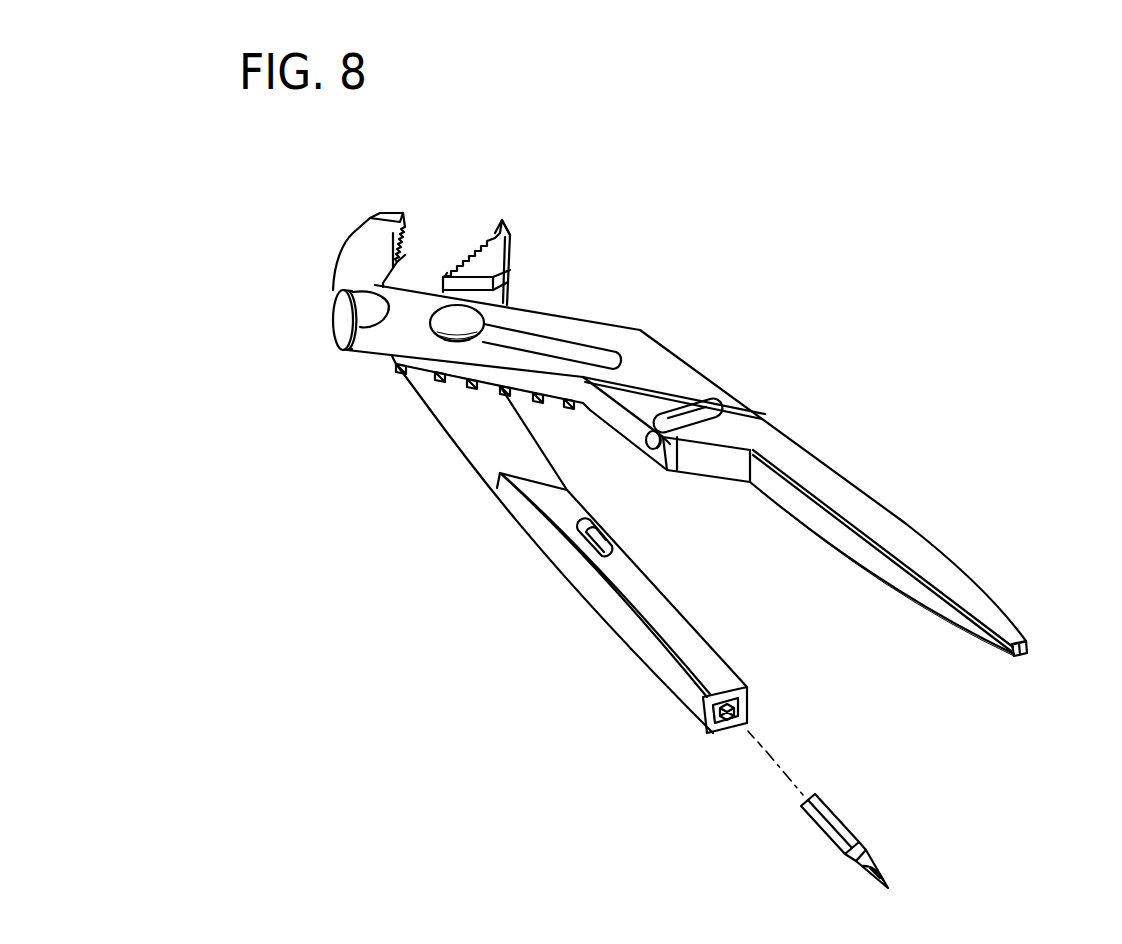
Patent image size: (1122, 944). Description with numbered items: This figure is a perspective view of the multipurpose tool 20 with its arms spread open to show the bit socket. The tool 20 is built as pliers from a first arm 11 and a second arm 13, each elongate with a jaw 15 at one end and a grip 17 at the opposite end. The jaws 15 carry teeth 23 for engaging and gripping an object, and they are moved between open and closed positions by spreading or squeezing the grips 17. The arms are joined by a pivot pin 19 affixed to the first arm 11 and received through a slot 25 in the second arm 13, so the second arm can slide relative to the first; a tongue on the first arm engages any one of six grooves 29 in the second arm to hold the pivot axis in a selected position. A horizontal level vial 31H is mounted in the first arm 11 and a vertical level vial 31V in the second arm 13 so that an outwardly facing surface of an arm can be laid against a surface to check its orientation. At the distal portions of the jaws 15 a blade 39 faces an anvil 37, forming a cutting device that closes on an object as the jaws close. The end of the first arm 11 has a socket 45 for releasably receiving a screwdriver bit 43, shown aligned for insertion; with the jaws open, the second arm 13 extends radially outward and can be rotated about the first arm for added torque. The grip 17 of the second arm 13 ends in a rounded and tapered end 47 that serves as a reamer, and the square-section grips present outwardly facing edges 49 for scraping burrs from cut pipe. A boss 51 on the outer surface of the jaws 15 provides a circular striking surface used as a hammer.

The first arm 11 is at (503, 533).
The second arm 13 is at (848, 453).
The jaw 15 is at (363, 250).
The grip 17 is at (883, 517).
The pivot pin 19 is at (460, 317).
The multipurpose tool 20 is at (320, 546).
The teeth 23 is at (446, 273).
The slot 25 is at (605, 354).
The grooves 29 is at (566, 401).
The horizontal level vial 31H is at (593, 547).
The vertical level vial 31V is at (697, 412).
The anvil 37 is at (497, 228).
The blade 39 is at (393, 217).
The screwdriver bit 43 is at (843, 820).
The socket 45 is at (733, 723).
The rounded and tapered end 47 is at (1020, 640).
The outwardly facing edges 49 is at (947, 547).
The boss 51 is at (343, 323).